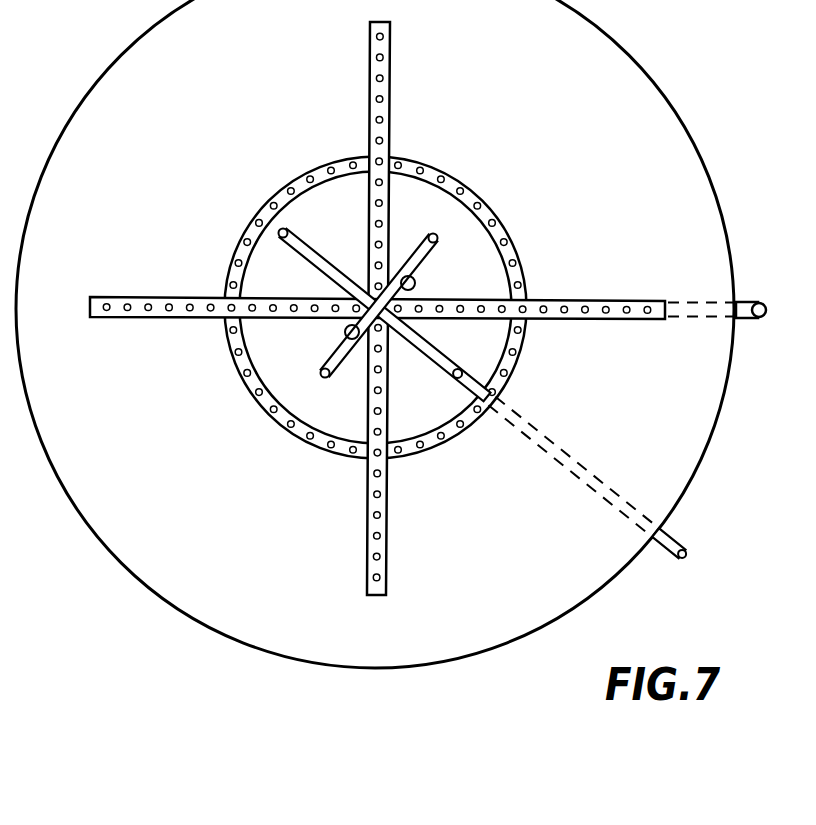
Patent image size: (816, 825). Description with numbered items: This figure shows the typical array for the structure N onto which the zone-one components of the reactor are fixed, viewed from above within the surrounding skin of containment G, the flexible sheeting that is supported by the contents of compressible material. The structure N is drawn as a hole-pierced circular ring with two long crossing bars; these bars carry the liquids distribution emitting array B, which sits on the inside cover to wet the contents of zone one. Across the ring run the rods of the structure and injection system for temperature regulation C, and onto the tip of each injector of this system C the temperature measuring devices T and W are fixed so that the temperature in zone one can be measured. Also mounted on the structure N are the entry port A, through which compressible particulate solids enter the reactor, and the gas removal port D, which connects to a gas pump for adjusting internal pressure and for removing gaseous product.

The liquids distribution emitting array B is at (441, 308).
The structure and injection system for temperature regulation C is at (487, 403).
The array and structure N is at (376, 308).
The temperature measuring device T is at (375, 307).
The temperature measuring device W is at (375, 307).
The gas removal port D is at (420, 288).
The entry port A is at (332, 340).
The skin of containment G is at (375, 334).